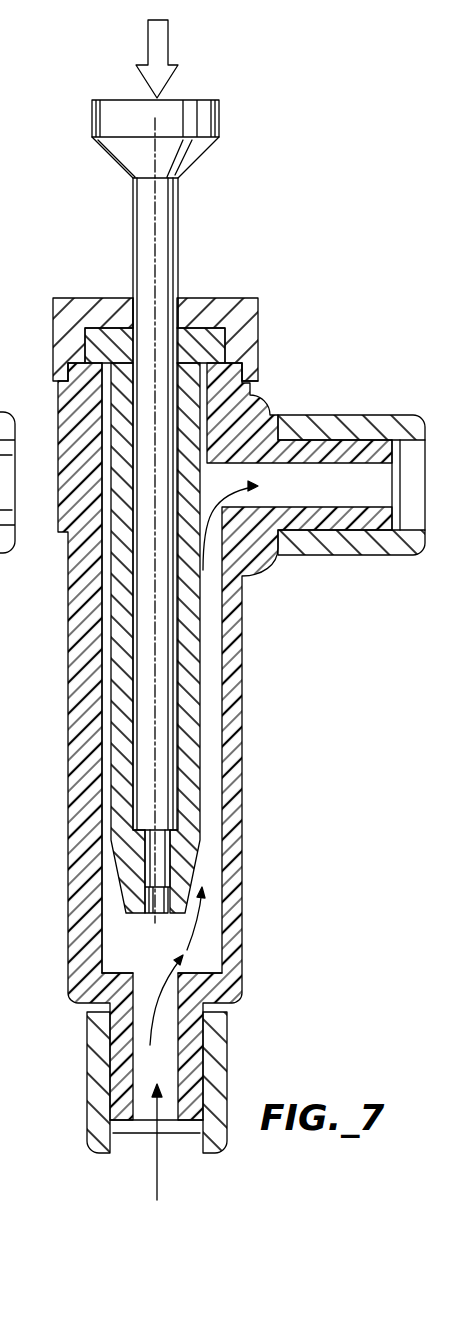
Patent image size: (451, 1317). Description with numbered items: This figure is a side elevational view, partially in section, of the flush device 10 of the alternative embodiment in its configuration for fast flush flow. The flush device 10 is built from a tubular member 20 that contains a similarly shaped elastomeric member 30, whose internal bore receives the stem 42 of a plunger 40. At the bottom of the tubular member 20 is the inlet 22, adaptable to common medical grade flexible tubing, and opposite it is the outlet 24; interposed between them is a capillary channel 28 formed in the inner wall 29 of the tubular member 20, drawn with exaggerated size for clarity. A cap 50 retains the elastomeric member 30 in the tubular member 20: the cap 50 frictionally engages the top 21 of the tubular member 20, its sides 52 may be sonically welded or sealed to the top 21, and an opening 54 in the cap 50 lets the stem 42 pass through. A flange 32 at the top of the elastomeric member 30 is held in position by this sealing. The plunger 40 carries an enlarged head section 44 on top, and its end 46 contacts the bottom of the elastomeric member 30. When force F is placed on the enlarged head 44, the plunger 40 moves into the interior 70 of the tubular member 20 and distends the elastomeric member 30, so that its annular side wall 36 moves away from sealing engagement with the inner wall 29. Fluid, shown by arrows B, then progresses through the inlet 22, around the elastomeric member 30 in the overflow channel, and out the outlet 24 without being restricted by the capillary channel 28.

The flush device 10 is at (214, 620).
The tubular member 20 is at (232, 812).
The top of the tubular member 21 is at (225, 337).
The inlet 22 is at (167, 1035).
The outlet 24 is at (316, 468).
The capillary channel 28 is at (223, 930).
The inner wall 29 is at (103, 820).
The elastomeric member 30 is at (193, 630).
The flange 32 is at (88, 348).
The annular side wall 36 is at (111, 745).
The plunger 40 is at (184, 505).
The stem 42 is at (172, 185).
The enlarged head section 44 is at (215, 122).
The end of the plunger 46 is at (162, 860).
The cap 50 is at (85, 298).
The sides of the cap 52 is at (258, 378).
The opening 54 is at (125, 298).
The interior of the tubular member 70 is at (166, 957).
The force arrow F is at (168, 50).
The fluid flow arrows B is at (155, 1128).